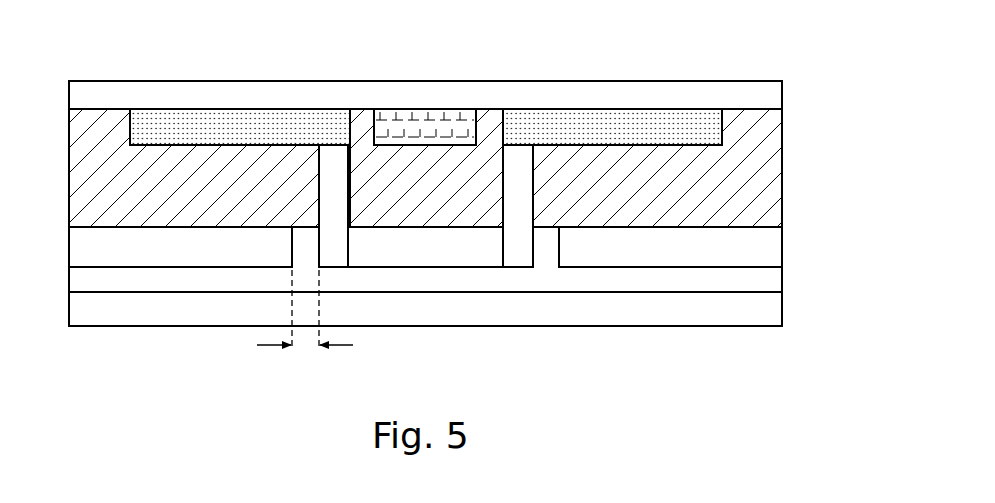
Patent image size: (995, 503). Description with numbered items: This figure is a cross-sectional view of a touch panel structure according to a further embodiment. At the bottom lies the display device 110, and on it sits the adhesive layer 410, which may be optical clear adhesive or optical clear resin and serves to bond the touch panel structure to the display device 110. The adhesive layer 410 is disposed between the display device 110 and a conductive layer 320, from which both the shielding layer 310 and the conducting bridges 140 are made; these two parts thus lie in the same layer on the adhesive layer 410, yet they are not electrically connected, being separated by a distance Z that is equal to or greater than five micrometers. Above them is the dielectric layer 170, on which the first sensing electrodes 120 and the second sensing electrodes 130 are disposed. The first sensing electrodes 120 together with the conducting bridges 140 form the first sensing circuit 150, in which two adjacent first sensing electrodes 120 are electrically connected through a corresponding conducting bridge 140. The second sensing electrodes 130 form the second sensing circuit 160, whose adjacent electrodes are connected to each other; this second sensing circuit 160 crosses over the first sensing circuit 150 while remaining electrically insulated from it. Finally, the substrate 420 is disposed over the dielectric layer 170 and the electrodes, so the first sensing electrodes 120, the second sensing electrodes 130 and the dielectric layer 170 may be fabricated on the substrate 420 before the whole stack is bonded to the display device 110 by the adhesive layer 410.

The display device 110 is at (773, 309).
The first sensing electrodes 120 is at (262, 128).
The second sensing electrodes 130 is at (428, 128).
The conducting bridges 140 is at (515, 253).
The first sensing circuit 150 is at (316, 102).
The second sensing circuit 160 is at (460, 102).
The dielectric layer 170 is at (773, 170).
The shielding layer 310 is at (578, 253).
The conductive layer 320 is at (607, 360).
The adhesive layer 410 is at (773, 283).
The substrate 420 is at (773, 97).
The distance Z is at (305, 364).